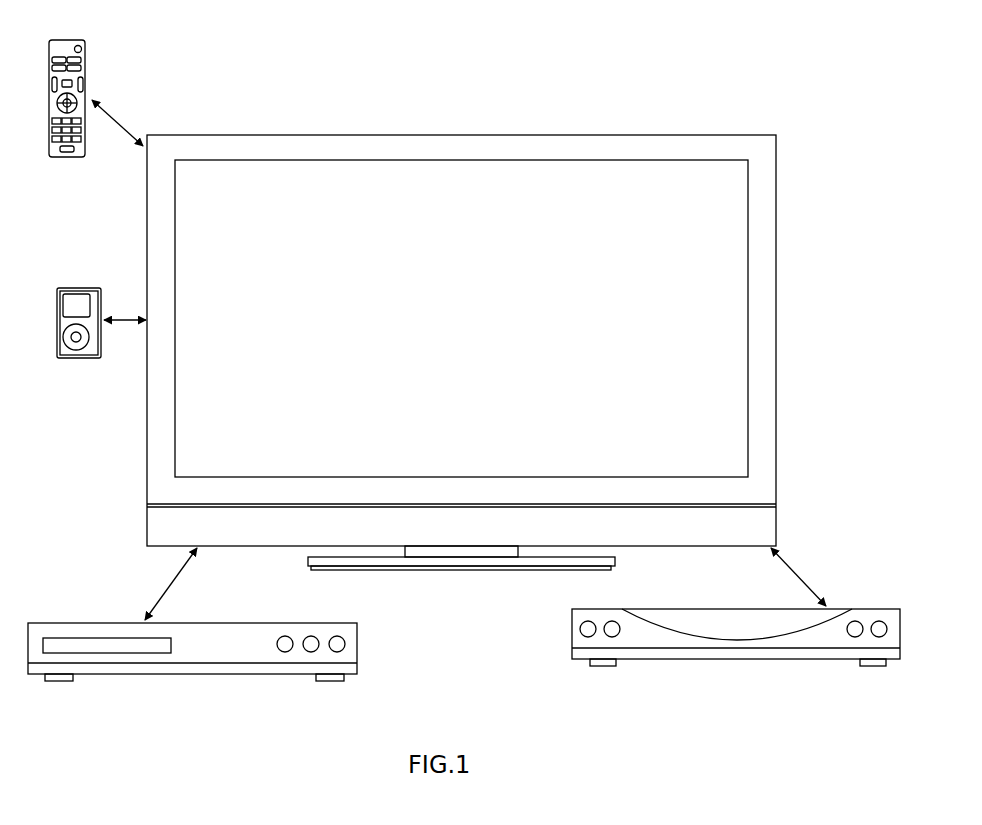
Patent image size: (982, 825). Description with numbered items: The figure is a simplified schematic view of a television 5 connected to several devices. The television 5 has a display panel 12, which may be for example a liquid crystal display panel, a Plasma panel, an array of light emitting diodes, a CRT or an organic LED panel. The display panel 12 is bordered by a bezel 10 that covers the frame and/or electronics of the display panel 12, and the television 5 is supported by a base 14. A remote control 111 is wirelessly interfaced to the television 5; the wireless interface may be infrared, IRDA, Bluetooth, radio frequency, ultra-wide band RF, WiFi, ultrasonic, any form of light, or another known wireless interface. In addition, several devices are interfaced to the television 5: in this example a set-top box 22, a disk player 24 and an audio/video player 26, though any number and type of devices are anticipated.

The television 5 is at (862, 262).
The bezel 10 is at (747, 152).
The display panel 12 is at (720, 348).
The base 14 is at (600, 558).
The set-top box 22 is at (882, 608).
The disk player 24 is at (218, 622).
The audio/video player 26 is at (92, 288).
The remote control 111 is at (78, 40).